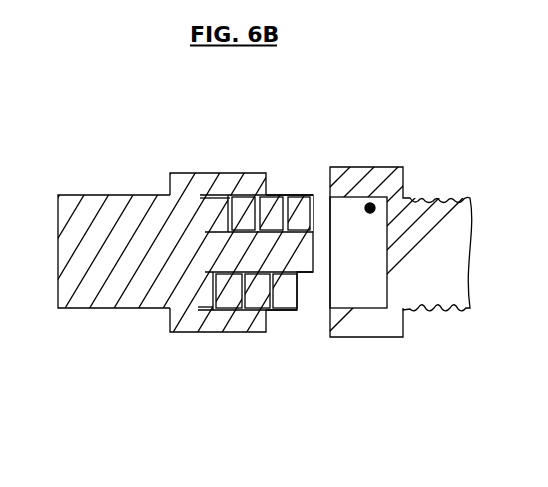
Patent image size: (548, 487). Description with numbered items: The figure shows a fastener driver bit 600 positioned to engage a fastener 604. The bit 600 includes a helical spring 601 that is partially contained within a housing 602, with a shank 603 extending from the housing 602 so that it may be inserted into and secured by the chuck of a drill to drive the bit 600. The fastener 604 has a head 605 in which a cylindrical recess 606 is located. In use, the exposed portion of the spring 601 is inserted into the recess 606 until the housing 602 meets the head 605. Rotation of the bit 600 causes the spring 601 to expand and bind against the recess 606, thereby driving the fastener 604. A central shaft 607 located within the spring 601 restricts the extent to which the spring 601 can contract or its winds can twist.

The fastener driver bit 600 is at (149, 138).
The helical spring 601 is at (302, 195).
The housing 602 is at (204, 332).
The shank 603 is at (120, 308).
The fastener 604 is at (415, 160).
The head 605 is at (357, 338).
The cylindrical recess 606 is at (369, 203).
The central shaft 607 is at (303, 274).